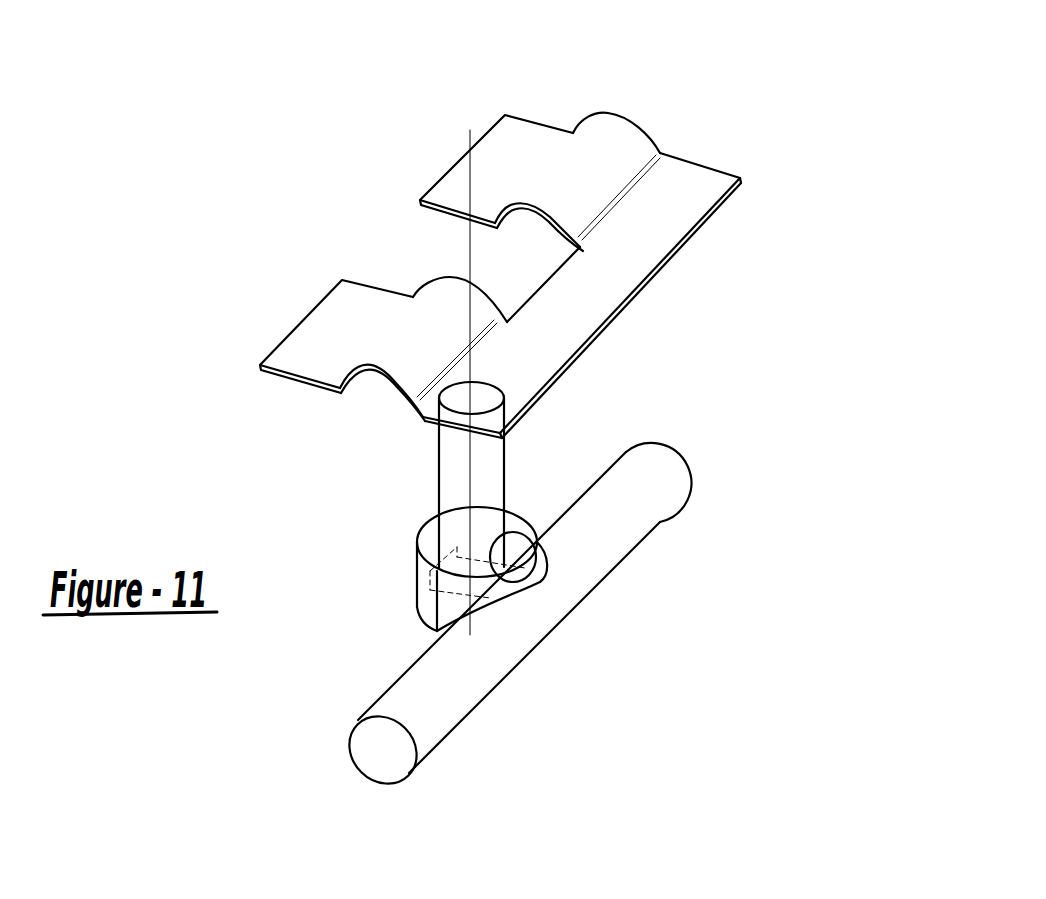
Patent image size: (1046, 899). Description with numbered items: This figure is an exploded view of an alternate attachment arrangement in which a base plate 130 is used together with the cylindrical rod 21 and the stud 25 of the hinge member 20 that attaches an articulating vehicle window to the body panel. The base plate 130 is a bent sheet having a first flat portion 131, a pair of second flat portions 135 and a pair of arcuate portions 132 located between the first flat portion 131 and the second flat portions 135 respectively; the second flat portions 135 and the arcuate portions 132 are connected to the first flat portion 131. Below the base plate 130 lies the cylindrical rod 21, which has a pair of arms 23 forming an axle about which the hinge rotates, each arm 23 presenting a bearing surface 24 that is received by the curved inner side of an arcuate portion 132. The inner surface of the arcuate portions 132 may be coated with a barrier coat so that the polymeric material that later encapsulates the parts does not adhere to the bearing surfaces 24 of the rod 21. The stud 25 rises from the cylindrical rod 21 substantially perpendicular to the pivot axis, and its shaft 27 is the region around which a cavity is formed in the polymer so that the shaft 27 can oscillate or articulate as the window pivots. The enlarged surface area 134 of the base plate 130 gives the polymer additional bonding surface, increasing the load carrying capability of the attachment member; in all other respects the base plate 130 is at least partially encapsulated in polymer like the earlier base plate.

The base plate 130 is at (506, 258).
The first flat portion 131 is at (707, 216).
The arcuate portions 132 is at (625, 117).
The plate surface 134 is at (575, 292).
The second flat portions 135 is at (527, 122).
The hinge member 20 is at (522, 581).
The cylindrical rod 21 is at (522, 581).
The arms 23 is at (647, 450).
The bearing surface 24 is at (657, 523).
The stud 25 is at (503, 465).
The shaft 27 is at (473, 528).